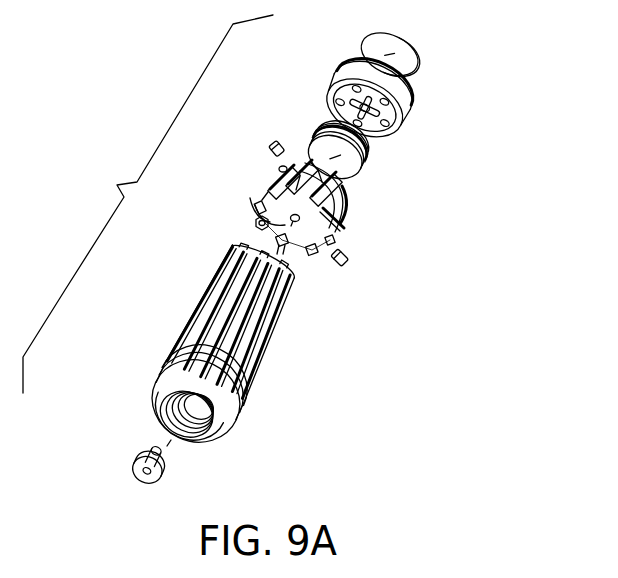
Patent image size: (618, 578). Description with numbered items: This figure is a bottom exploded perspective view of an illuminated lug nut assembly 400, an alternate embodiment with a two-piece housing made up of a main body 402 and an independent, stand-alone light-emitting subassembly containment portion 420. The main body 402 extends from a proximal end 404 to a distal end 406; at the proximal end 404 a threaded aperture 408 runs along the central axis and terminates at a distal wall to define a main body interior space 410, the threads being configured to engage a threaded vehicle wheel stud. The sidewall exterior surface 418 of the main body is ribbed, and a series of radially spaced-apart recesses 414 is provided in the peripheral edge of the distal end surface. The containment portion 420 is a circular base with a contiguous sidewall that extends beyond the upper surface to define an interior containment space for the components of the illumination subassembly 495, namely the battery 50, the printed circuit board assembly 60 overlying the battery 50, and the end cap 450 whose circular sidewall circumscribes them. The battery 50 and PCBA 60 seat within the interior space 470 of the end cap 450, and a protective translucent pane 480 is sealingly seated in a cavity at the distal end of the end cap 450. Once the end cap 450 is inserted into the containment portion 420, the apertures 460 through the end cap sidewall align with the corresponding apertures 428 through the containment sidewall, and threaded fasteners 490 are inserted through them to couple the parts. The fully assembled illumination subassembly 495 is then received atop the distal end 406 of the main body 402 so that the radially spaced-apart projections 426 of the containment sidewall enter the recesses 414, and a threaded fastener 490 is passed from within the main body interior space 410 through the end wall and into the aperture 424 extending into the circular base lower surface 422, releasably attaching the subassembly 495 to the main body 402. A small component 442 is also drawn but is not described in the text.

The illuminated lug nut assembly 400 is at (148, 204).
The main body 402 is at (272, 355).
The proximal end 404 is at (143, 405).
The distal end 406 is at (232, 245).
The threaded aperture 408 is at (173, 418).
The main body interior space 410 is at (193, 417).
The radially spaced-apart recesses 414 is at (282, 250).
The sidewall exterior surface 418 is at (208, 277).
The light-emitting subassembly containment portion 420 is at (352, 225).
The circular base lower surface 422 is at (258, 206).
The aperture 424 is at (256, 222).
The radially spaced-apart projections 426 is at (338, 228).
The apertures 428 is at (281, 166).
The contact sleeve 442 is at (341, 266).
The end cap 450 is at (415, 112).
The apertures 460 is at (400, 120).
The interior space 470 is at (347, 99).
The protective translucent pane 480 is at (413, 73).
The threaded fasteners 490 is at (138, 482).
The illumination subassembly 495 is at (520, 170).
The battery 50 is at (355, 173).
The printed circuit board assembly 60 is at (315, 124).